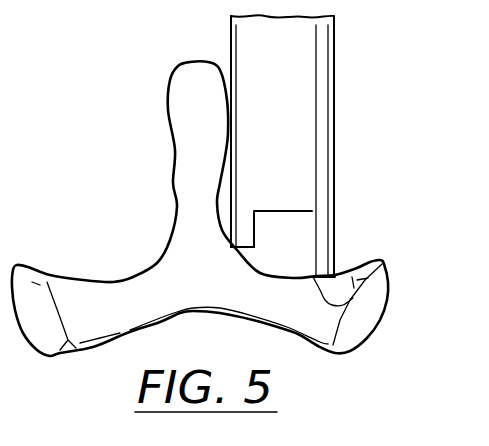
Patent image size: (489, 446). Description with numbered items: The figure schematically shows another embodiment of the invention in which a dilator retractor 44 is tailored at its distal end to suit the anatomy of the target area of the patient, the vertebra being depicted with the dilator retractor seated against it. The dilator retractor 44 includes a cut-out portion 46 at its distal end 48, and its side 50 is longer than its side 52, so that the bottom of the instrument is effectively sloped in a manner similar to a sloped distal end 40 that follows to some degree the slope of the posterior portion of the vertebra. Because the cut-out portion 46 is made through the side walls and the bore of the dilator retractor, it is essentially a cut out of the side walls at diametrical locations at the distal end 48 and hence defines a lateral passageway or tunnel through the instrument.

The distal end 40 is at (196, 208).
The dilator retractor 44 is at (297, 118).
The cut-out portion 46 is at (313, 218).
The distal end 48 is at (383, 263).
The side 50 is at (335, 183).
The side 52 is at (240, 227).